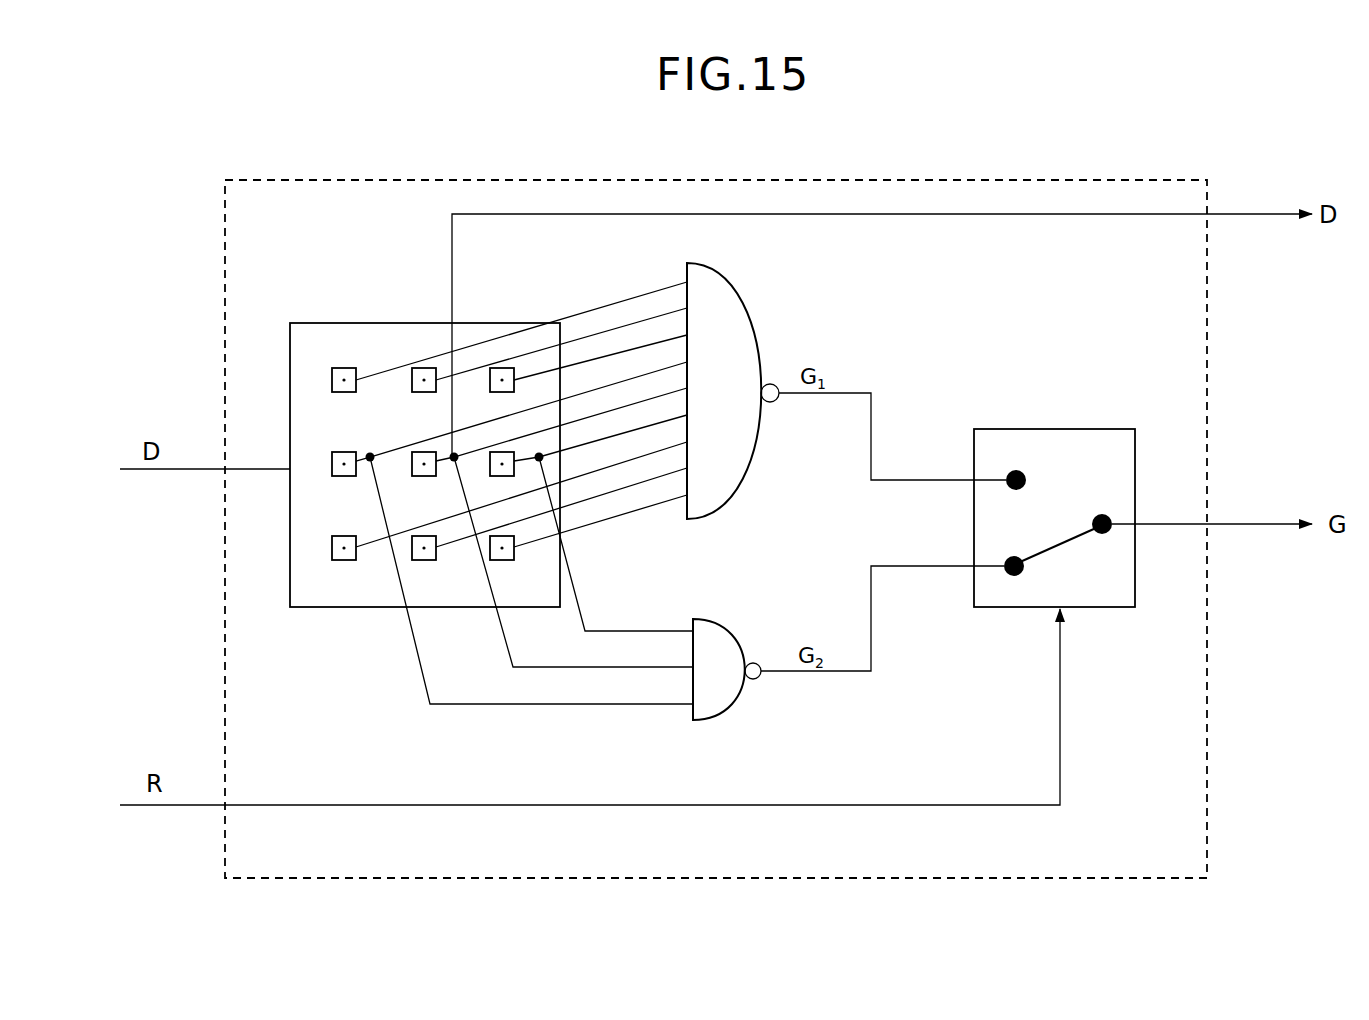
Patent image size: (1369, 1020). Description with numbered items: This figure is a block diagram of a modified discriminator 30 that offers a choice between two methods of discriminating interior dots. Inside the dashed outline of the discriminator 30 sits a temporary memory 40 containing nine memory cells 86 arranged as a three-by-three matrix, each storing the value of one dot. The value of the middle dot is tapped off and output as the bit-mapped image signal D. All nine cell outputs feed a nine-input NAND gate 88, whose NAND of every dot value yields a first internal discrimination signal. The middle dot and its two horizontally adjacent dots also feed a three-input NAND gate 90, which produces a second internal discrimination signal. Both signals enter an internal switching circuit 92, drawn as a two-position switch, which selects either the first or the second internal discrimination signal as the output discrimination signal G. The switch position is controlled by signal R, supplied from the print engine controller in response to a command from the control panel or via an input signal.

The discriminator 30 is at (273, 180).
The temporary memory 40 is at (420, 454).
The memory cells 86 is at (343, 561).
The nine-input NAND gate 88 is at (745, 310).
The three-input NAND gate 90 is at (727, 707).
The internal switching circuit 92 is at (1043, 428).